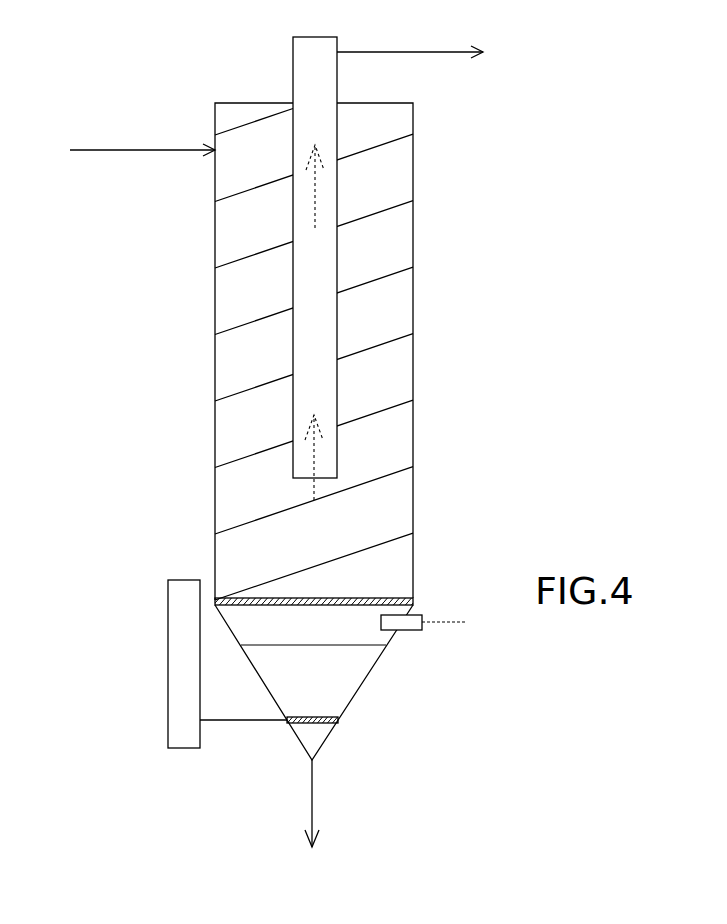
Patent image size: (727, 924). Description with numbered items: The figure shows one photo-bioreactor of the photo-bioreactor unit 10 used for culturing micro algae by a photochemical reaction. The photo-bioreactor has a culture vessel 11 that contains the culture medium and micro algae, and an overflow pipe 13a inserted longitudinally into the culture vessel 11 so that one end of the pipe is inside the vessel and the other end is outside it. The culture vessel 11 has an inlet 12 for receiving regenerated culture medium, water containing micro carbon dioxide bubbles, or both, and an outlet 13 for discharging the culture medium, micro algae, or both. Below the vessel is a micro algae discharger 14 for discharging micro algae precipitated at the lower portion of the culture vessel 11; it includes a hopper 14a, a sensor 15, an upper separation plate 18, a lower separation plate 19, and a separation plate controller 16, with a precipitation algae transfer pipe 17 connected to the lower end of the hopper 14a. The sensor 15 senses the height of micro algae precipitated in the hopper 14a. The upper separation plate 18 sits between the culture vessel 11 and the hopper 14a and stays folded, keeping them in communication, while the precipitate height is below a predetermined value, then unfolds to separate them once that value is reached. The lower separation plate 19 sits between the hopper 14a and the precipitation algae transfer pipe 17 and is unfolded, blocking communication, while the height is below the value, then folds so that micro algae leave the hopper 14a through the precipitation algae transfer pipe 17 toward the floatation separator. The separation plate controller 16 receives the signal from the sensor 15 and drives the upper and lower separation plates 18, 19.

The photo-bioreactor unit 10 is at (447, 355).
The culture vessel 11 is at (215, 283).
The inlet 12 is at (124, 148).
The outlet 13 is at (420, 54).
The overflow pipe 13a is at (293, 68).
The micro algae discharger 14 is at (147, 622).
The hopper 14a is at (380, 657).
The sensor 15 is at (405, 632).
The separation plate controller 16 is at (179, 665).
The precipitation algae transfer pipe 17 is at (315, 793).
The upper separation plate 18 is at (355, 597).
The lower separation plate 19 is at (312, 715).